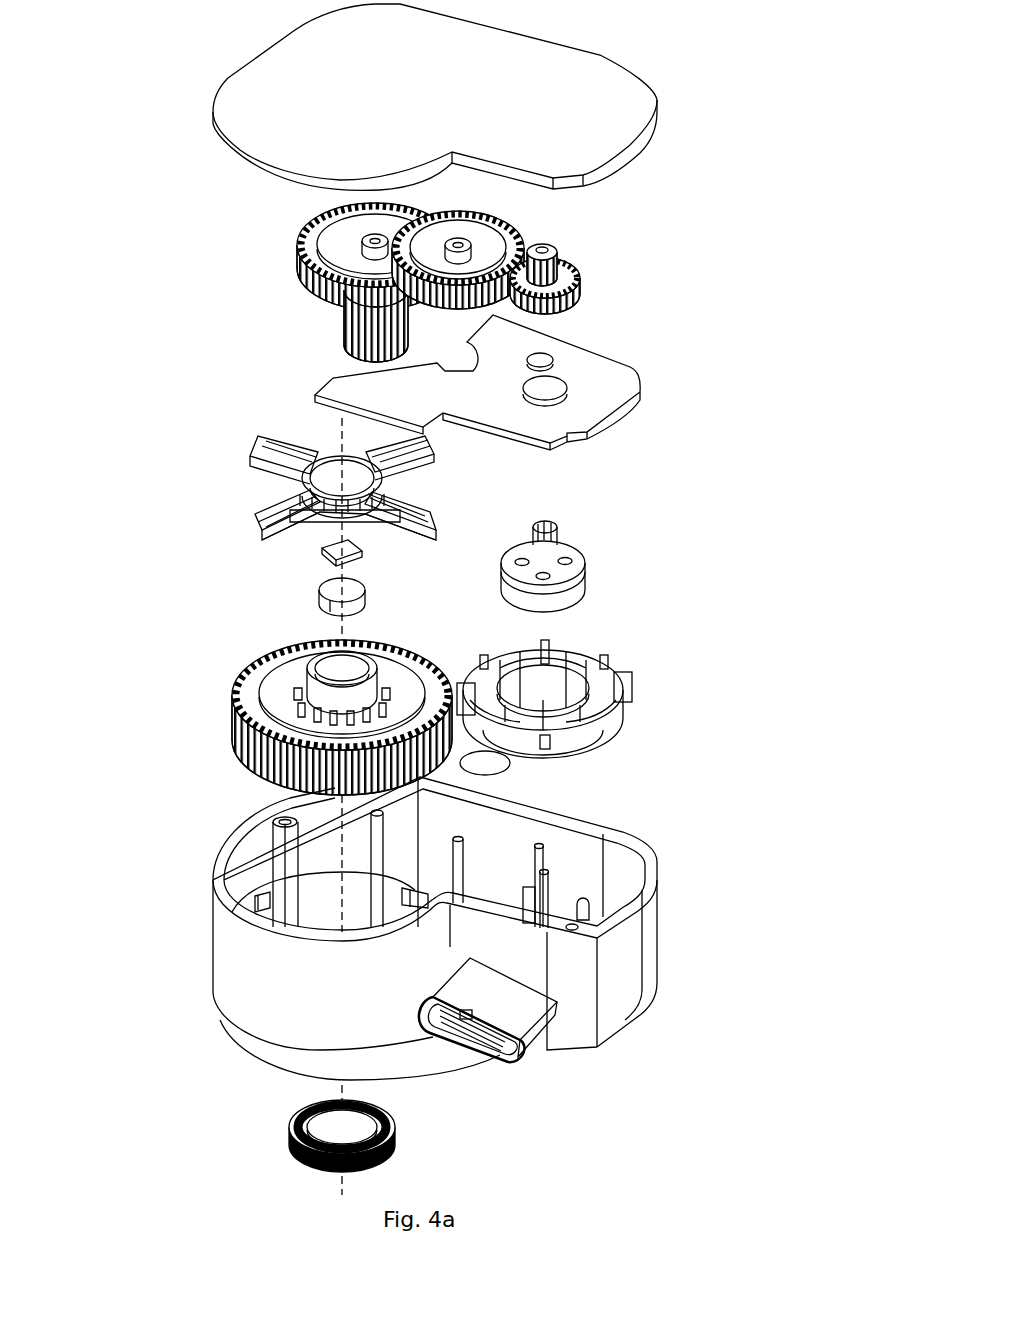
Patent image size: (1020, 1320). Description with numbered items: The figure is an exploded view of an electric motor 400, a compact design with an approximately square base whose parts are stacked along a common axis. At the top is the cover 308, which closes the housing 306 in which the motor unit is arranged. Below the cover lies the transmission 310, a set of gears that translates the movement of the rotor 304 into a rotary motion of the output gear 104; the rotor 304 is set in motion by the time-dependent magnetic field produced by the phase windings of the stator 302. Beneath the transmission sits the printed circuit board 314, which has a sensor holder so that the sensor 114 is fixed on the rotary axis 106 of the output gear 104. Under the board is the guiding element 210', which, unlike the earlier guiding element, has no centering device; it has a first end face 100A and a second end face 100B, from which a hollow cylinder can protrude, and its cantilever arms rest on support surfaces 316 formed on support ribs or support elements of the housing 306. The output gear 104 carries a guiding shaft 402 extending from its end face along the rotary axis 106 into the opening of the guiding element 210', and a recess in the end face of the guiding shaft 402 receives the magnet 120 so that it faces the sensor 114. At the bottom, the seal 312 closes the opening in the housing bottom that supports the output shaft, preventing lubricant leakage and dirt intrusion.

The electric motor 400 is at (202, 1104).
The cover 308 is at (668, 133).
The transmission 310 is at (266, 268).
The printed circuit board 314 is at (668, 385).
The guiding element 210' is at (297, 498).
The second end face 100B is at (292, 452).
The first end face 100A is at (302, 543).
The sensor 114 is at (366, 555).
The magnet 120 is at (368, 598).
The rotary axis 106 is at (336, 632).
The guiding shaft 402 is at (318, 660).
The output gear 104 is at (296, 701).
The rotor 304 is at (592, 550).
The stator 302 is at (647, 700).
The housing 306 is at (495, 915).
The support surfaces 316 is at (264, 918).
The seal 312 is at (397, 1125).